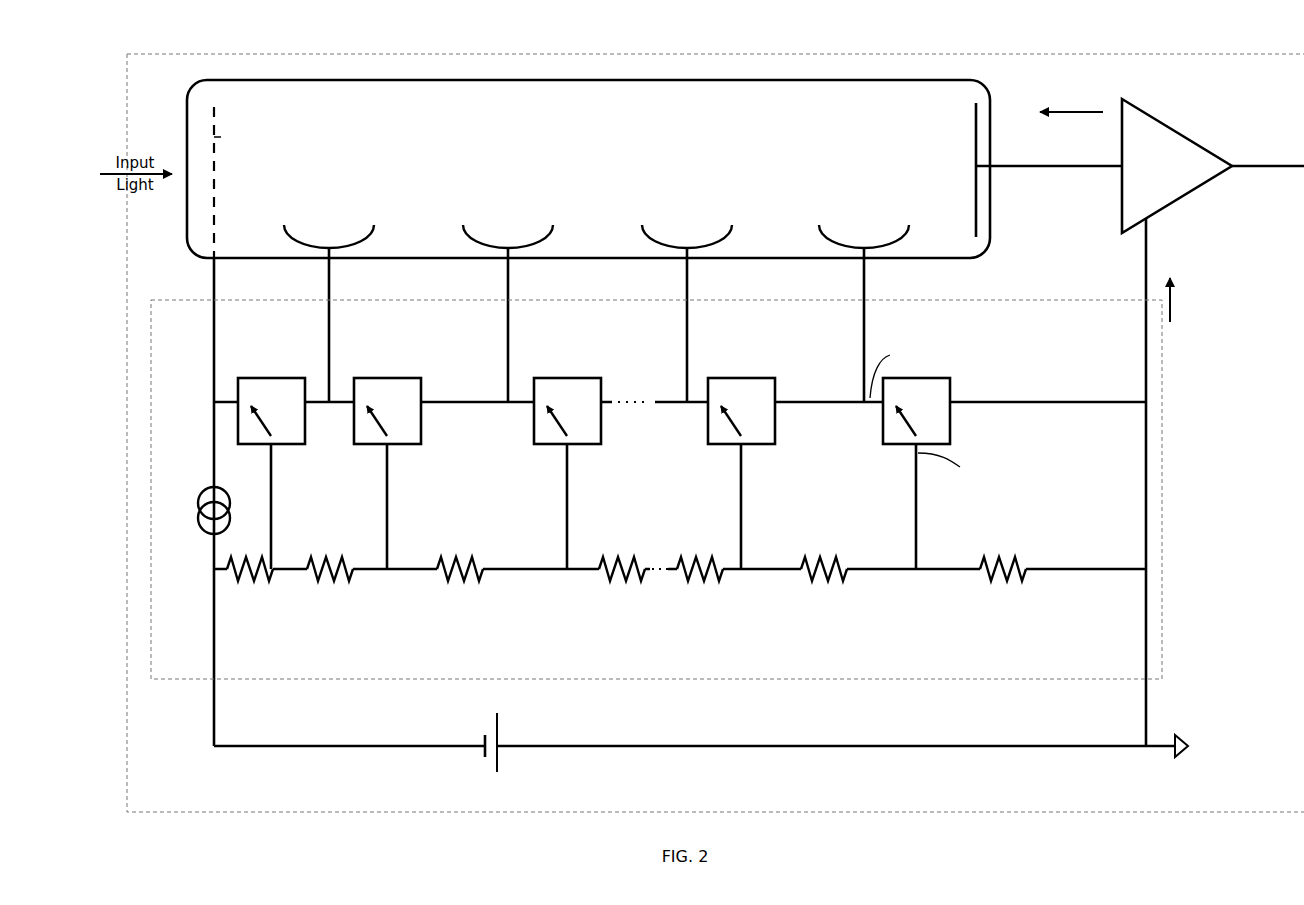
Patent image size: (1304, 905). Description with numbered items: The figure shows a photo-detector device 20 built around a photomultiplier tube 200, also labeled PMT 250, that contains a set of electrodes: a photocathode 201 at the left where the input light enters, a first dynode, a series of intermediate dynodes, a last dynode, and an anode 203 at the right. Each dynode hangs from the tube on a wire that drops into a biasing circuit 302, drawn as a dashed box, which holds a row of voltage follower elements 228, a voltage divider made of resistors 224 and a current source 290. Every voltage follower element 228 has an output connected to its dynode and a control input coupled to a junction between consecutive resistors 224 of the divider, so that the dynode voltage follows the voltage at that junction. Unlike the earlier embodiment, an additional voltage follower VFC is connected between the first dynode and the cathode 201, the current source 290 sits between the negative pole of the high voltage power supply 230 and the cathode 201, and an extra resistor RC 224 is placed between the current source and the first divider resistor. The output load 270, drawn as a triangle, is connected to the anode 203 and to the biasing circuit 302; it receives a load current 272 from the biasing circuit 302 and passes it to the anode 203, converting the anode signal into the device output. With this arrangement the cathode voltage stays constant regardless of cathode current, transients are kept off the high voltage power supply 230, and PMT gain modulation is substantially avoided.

The photo-detector device 20 is at (718, 54).
The photomultiplier tube 250 is at (588, 169).
The photocathode 201 is at (216, 137).
The anode 203 is at (975, 193).
The output load 270 is at (1177, 166).
The load current 272 is at (1130, 198).
The photomultiplier tube 200 is at (1024, 214).
The biasing circuit 302 is at (1163, 489).
The voltage follower element 228 is at (305, 444).
The current source 290 is at (209, 510).
The resistor 224 is at (680, 594).
The high voltage power supply 230 is at (701, 740).